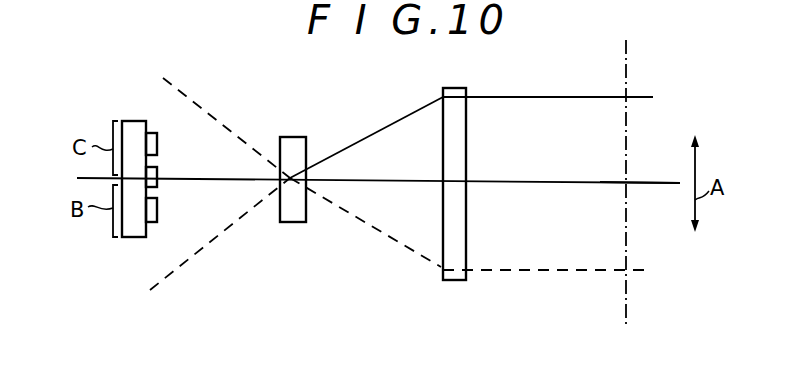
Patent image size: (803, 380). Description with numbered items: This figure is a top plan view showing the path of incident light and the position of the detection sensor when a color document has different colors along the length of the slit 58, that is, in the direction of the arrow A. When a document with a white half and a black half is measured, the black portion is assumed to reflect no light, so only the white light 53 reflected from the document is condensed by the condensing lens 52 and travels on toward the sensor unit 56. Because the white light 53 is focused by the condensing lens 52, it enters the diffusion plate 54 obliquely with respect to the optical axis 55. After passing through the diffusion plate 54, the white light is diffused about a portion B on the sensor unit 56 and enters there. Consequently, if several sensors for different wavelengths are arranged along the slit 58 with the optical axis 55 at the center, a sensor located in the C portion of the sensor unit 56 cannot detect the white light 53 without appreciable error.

The condensing lens 52 is at (451, 281).
The white light 53 is at (498, 112).
The diffusion plate 54 is at (293, 222).
The optical axis 55 is at (650, 186).
The sensor unit 56 is at (123, 93).
The slit 58 is at (628, 80).